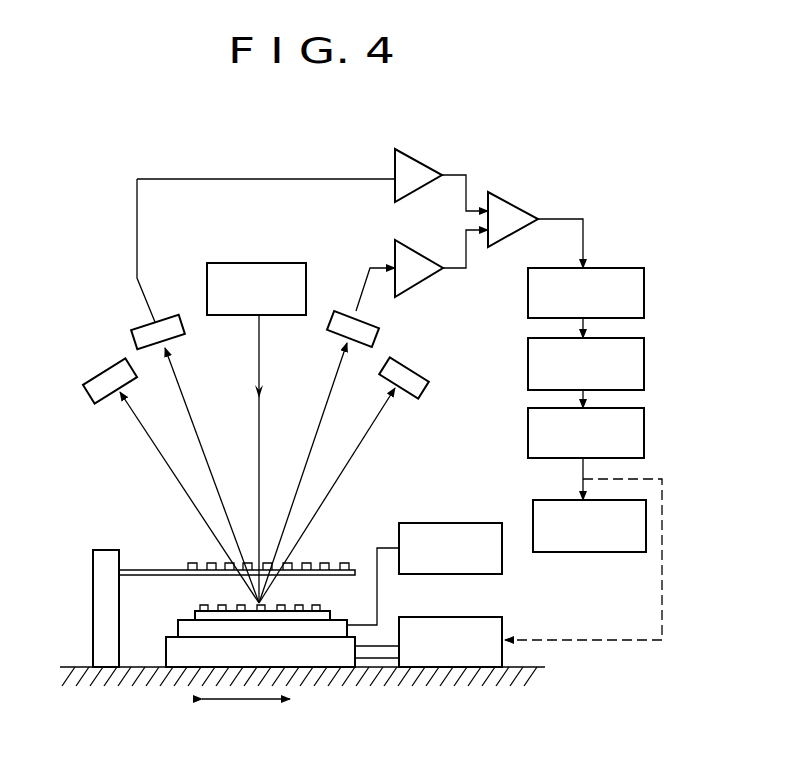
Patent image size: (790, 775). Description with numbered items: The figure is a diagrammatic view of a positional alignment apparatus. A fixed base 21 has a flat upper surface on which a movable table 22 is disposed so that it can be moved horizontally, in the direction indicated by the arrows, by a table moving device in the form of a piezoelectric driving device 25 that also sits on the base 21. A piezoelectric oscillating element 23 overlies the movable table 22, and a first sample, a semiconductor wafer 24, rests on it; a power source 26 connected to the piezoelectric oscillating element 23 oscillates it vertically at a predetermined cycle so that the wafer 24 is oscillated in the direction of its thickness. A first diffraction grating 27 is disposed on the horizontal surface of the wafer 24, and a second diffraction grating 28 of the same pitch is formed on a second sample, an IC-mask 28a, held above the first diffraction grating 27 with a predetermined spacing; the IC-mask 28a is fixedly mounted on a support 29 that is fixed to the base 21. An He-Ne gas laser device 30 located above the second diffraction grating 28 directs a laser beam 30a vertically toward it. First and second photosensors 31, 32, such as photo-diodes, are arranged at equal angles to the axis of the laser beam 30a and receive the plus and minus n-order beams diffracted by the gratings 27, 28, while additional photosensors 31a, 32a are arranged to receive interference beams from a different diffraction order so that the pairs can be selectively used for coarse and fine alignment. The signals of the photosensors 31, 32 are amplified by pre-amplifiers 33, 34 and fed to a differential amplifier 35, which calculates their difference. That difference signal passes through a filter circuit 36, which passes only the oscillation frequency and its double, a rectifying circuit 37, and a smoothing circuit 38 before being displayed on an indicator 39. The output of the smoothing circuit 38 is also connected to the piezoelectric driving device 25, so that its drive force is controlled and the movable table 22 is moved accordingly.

The fixed base 21 is at (366, 672).
The movable table 22 is at (166, 656).
The piezoelectric oscillating element 23 is at (178, 632).
The semiconductor wafer 24 is at (195, 613).
The piezoelectric driving device 25 is at (505, 632).
The power source 26 is at (437, 523).
The first diffraction grating 27 is at (330, 590).
The second diffraction grating 28 is at (328, 563).
The IC-mask 28a is at (152, 568).
The support 29 is at (93, 594).
The He-Ne gas laser device 30 is at (262, 263).
The laser beam 30a is at (259, 468).
The first photosensor 31 is at (343, 311).
The additional photosensor 31a is at (412, 347).
The second photosensor 32 is at (163, 313).
The additional photosensor 32a is at (98, 366).
The pre-amplifier 33 is at (430, 281).
The pre-amplifier 34 is at (433, 163).
The differential amplifier 35 is at (524, 210).
The filter circuit 36 is at (646, 296).
The rectifying circuit 37 is at (646, 372).
The smoothing circuit 38 is at (646, 443).
The indicator 39 is at (534, 498).